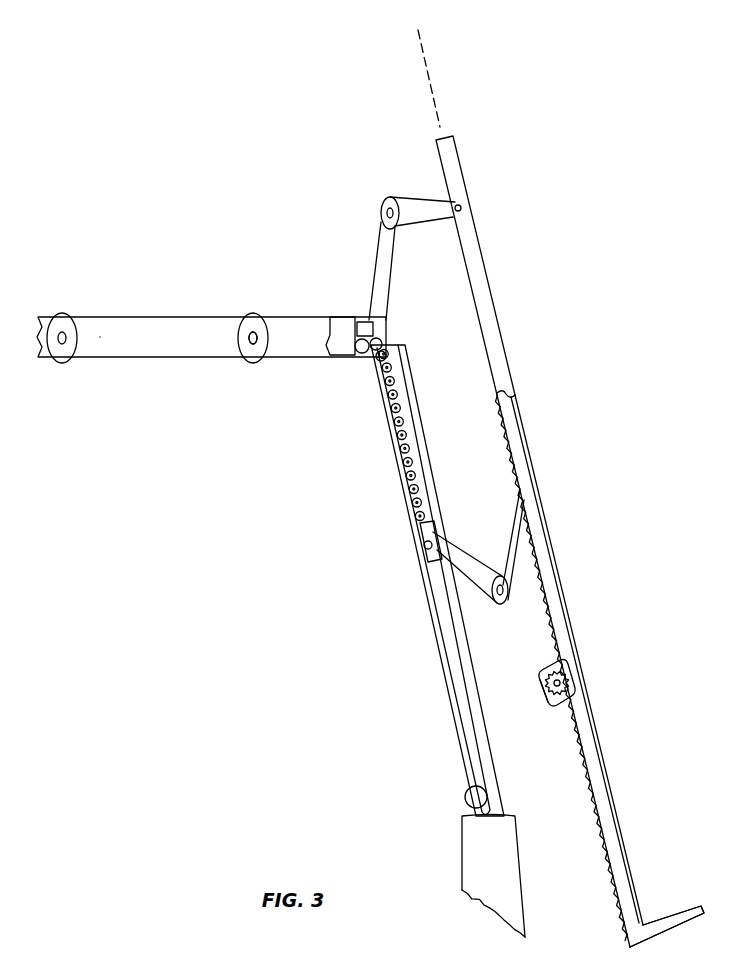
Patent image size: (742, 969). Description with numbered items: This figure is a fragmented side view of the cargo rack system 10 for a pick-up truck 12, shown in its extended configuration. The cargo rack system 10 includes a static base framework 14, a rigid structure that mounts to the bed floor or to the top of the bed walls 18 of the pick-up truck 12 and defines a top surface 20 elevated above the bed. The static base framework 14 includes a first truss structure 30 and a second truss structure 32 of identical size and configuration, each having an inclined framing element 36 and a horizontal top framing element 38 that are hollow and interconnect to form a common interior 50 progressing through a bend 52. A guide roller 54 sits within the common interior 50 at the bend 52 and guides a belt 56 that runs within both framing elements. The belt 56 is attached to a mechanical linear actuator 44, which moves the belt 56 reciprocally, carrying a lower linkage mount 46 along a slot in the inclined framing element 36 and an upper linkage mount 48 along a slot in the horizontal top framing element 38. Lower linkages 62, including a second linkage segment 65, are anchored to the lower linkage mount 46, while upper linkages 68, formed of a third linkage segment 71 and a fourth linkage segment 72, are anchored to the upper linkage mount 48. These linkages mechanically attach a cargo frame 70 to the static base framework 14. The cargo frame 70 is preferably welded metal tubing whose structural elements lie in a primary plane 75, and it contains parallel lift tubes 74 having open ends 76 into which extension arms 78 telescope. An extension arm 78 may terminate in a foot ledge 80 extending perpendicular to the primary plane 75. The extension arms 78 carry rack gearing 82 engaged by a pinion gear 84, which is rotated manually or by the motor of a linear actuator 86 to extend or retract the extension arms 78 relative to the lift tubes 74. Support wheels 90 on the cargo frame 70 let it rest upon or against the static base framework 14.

The cargo rack system 10 is at (570, 533).
The pick-up truck 12 is at (525, 886).
The static base framework 14 is at (85, 310).
The bed walls 18 is at (483, 876).
The top surface 20 is at (254, 326).
The first truss structure 30 is at (211, 316).
The second truss structure 32 is at (211, 316).
The inclined framing element 36 is at (429, 580).
The horizontal top framing element 38 is at (302, 350).
The mechanical linear actuator 44 is at (460, 682).
The lower linkage mount 46 is at (424, 540).
The upper linkage mount 48 is at (380, 332).
The common interior 50 is at (345, 325).
The bend 52 is at (380, 318).
The guide roller 54 is at (388, 340).
The belt 56 is at (403, 468).
The lower linkages 62 is at (508, 536).
The second linkage segment 65 is at (466, 536).
The upper linkages 68 is at (390, 197).
The cargo frame 70 is at (497, 292).
The third linkage segment 71 is at (408, 215).
The fourth linkage segment 72 is at (372, 262).
The lift tubes 74 is at (502, 368).
The primary plane 75 is at (431, 70).
The open ends 76 is at (571, 671).
The extension arms 78 is at (618, 862).
The foot ledge 80 is at (672, 906).
The rack gearing 82 is at (590, 775).
The pinion gear 84 is at (553, 691).
The linear actuator 86 is at (560, 705).
The support wheels 90 is at (255, 355).